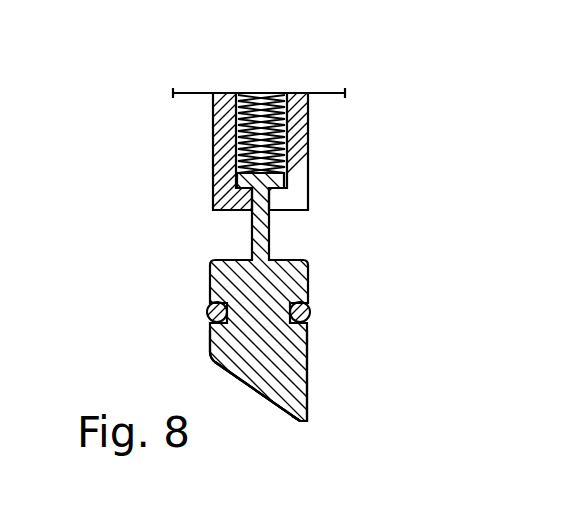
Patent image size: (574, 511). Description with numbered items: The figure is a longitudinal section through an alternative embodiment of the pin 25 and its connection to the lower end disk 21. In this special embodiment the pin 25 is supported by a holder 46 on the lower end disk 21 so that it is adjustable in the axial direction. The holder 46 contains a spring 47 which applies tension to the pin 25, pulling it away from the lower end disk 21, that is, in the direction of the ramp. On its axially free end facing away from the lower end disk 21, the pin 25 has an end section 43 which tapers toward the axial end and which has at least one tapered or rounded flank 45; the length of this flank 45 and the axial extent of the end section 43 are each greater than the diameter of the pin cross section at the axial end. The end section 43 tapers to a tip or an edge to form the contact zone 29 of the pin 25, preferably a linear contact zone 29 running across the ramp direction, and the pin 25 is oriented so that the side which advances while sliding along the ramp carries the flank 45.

The lower end disk 21 is at (318, 95).
The pin 25 is at (280, 290).
The contact zone 29 is at (300, 421).
The end section 43 is at (290, 350).
The flank 45 is at (245, 388).
The holder 46 is at (213, 170).
The spring 47 is at (277, 93).